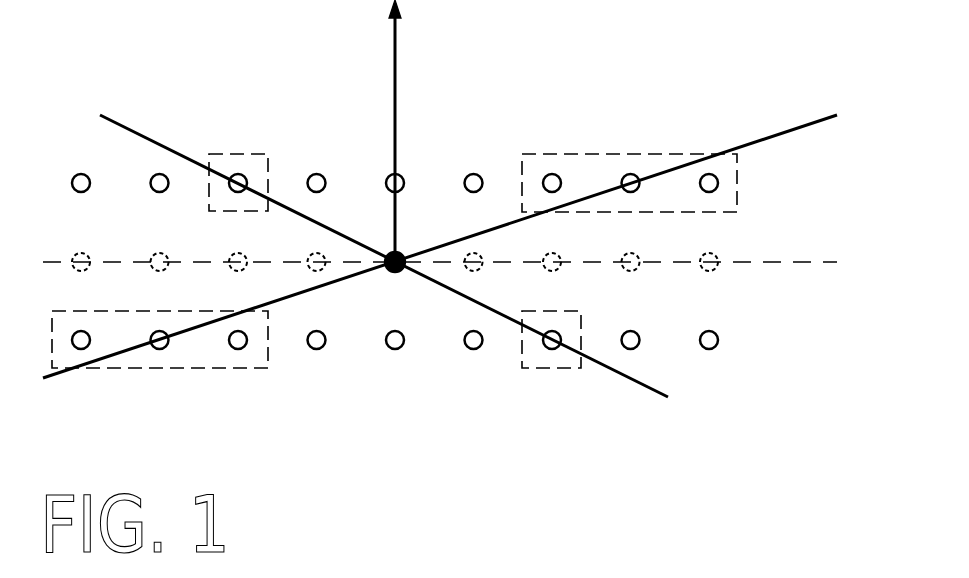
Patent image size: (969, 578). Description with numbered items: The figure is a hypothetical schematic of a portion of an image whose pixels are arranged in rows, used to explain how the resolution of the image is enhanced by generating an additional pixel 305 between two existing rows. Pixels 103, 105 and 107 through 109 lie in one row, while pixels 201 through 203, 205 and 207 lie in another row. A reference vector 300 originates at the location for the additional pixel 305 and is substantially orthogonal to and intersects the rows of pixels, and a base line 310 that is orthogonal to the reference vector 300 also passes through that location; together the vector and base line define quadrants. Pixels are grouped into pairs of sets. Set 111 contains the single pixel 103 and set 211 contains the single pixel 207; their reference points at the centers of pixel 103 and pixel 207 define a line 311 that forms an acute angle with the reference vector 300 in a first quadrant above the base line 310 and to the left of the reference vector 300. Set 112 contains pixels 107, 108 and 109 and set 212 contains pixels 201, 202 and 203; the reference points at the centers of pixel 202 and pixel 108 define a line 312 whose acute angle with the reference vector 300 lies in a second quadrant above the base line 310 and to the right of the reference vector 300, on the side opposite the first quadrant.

The pixel 103 is at (238, 173).
The pixel 105 is at (397, 174).
The pixel 107 is at (552, 172).
The pixel 108 is at (630, 172).
The pixel 109 is at (708, 172).
The set 111 is at (258, 152).
The set 112 is at (738, 185).
The pixel 201 is at (80, 351).
The pixel 202 is at (160, 350).
The pixel 203 is at (238, 351).
The pixel 205 is at (390, 352).
The pixel 207 is at (551, 350).
The set 211 is at (575, 370).
The set 212 is at (258, 370).
The reference vector 300 is at (396, 28).
The additional pixel 305 is at (400, 272).
The base line 310 is at (773, 262).
The line 311 is at (122, 124).
The line 312 is at (766, 137).